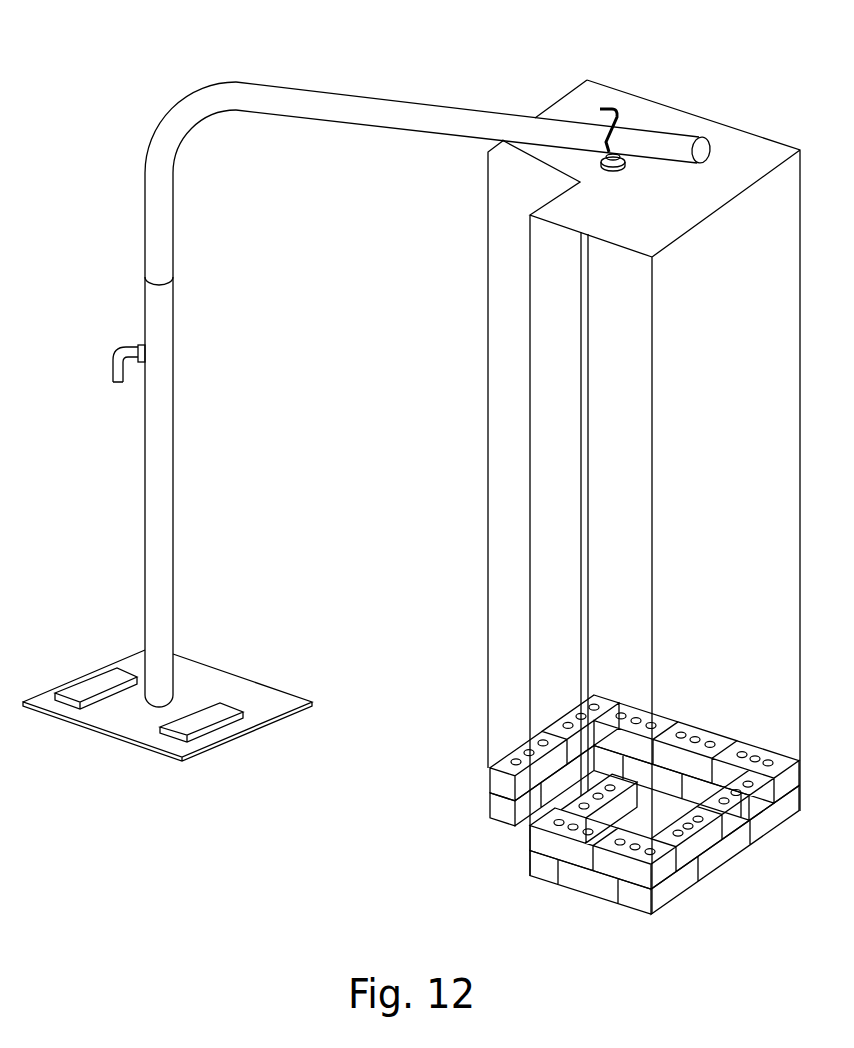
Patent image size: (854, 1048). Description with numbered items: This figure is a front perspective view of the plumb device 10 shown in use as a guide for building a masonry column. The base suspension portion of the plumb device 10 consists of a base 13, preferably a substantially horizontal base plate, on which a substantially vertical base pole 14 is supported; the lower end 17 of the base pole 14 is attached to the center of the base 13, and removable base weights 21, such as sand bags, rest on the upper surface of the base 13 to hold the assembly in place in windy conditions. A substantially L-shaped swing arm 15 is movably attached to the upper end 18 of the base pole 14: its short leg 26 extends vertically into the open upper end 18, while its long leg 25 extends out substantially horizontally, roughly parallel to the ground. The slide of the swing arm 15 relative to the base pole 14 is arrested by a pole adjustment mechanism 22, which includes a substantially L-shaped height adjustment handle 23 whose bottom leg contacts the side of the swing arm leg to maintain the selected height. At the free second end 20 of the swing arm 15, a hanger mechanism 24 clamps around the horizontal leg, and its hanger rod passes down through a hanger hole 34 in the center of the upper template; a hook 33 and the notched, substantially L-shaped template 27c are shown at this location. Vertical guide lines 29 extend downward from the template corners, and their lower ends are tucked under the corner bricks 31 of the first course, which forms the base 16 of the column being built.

The plumb device 10 is at (722, 83).
The base 13 is at (133, 665).
The base pole 14 is at (147, 428).
The swing arm 15 is at (362, 86).
The brick base 16 is at (599, 829).
The lower end of the base pole 17 is at (173, 695).
The upper end of the base pole 18 is at (147, 282).
The second end of the swing arm 20 is at (700, 137).
The base weights 21 is at (160, 730).
The pole adjustment mechanism 22 is at (97, 342).
The height adjustment handle 23 is at (112, 372).
The hanger mechanism 24 is at (641, 472).
The long leg of the swing arm 25 is at (260, 97).
The short leg of the swing arm 26 is at (157, 194).
The notch 27c is at (565, 105).
The vertical guide lines 29 is at (800, 321).
The corner bricks 31 is at (636, 905).
The hook 33 is at (604, 110).
The hanger hole 34 is at (602, 162).